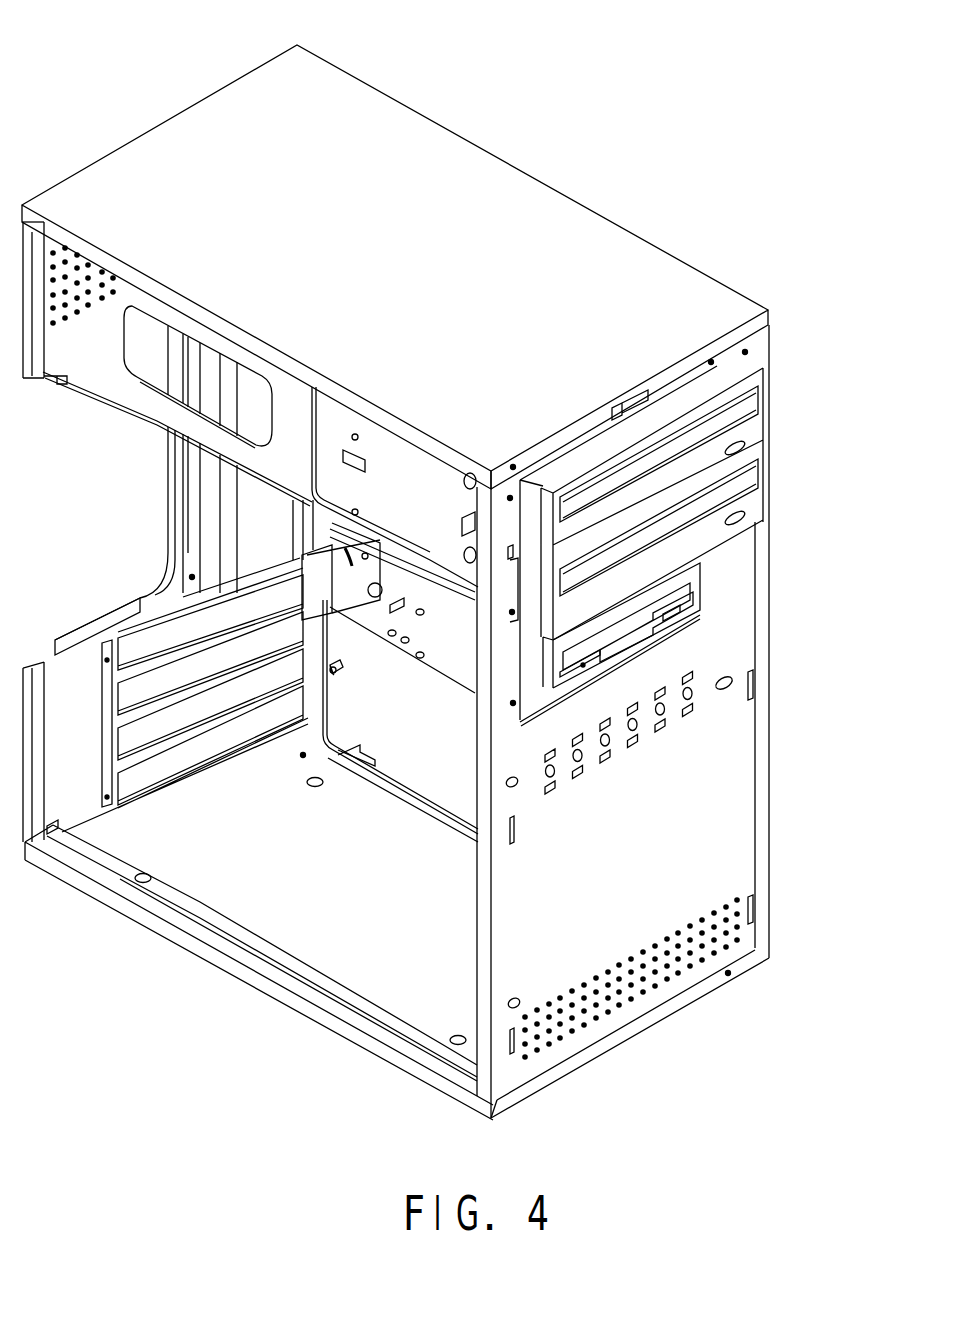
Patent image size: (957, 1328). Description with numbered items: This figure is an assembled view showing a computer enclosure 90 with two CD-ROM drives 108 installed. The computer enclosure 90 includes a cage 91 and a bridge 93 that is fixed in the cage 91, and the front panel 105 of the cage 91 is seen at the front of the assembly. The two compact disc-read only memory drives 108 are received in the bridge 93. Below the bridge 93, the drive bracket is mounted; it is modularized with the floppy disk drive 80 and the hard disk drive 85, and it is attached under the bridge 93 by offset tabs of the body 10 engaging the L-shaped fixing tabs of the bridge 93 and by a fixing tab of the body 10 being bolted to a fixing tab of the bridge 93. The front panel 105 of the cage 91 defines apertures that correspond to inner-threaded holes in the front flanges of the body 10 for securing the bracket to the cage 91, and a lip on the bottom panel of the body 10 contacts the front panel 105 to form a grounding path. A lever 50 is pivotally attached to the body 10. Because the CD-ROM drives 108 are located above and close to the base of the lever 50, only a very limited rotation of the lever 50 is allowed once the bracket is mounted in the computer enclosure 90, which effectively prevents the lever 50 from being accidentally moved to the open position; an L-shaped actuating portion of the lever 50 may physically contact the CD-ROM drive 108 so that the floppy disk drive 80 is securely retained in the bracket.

The computer enclosure 90 is at (160, 59).
The cage 91 is at (555, 190).
The bridge 93 is at (284, 456).
The front panel 105 is at (733, 783).
The CD-ROM drive 108 is at (752, 428).
The floppy disk drive 80 is at (526, 675).
The body 10 is at (448, 672).
The lever 50 is at (373, 573).
The hard disk drive 85 is at (318, 596).